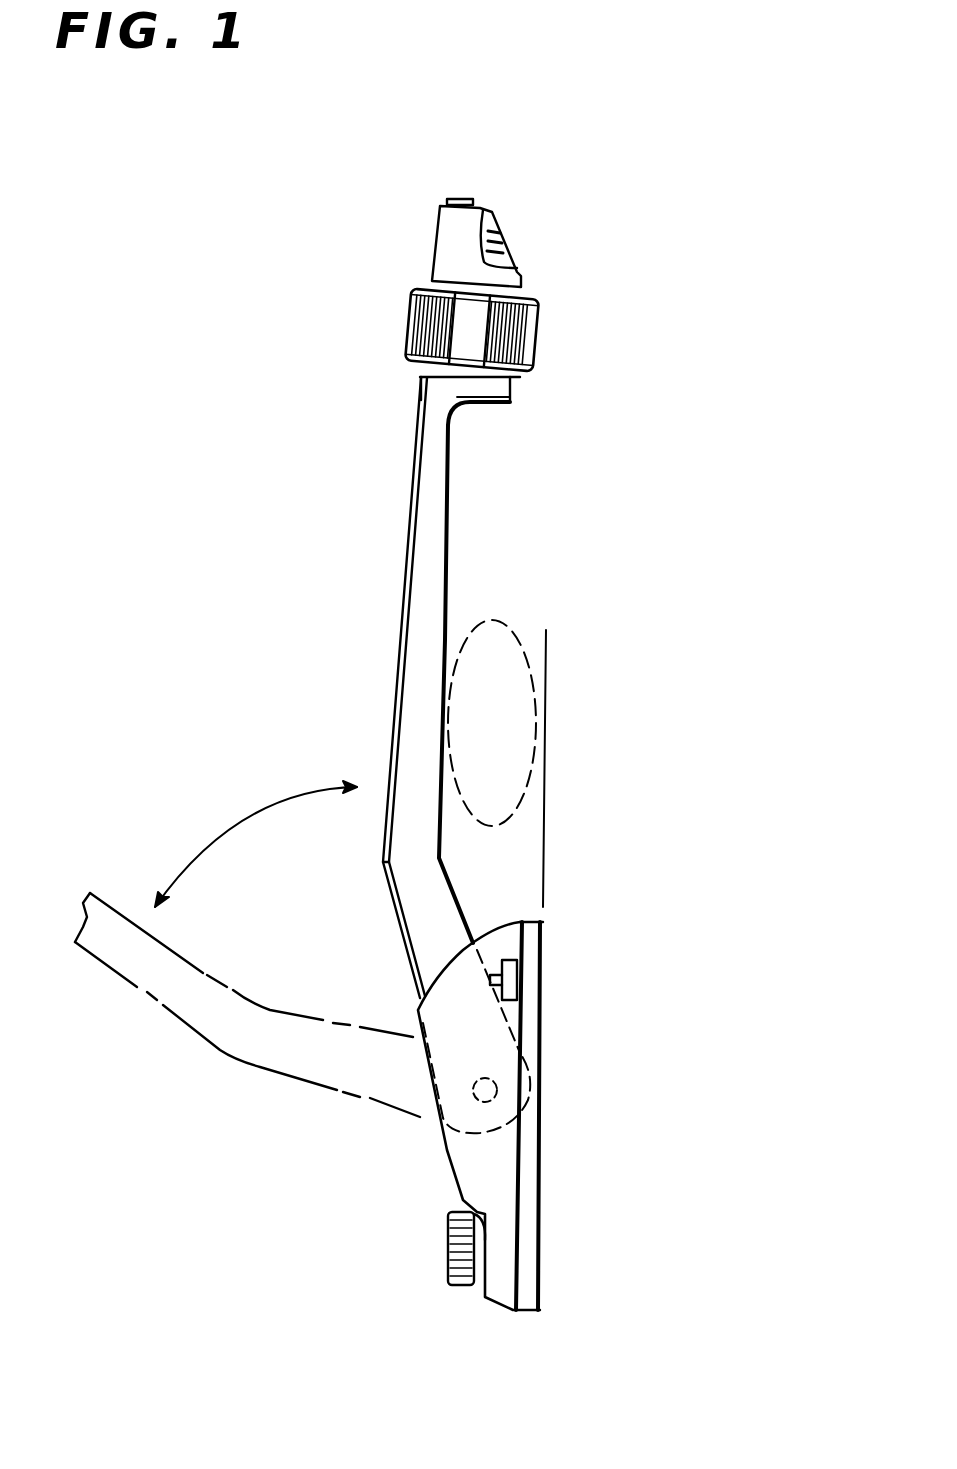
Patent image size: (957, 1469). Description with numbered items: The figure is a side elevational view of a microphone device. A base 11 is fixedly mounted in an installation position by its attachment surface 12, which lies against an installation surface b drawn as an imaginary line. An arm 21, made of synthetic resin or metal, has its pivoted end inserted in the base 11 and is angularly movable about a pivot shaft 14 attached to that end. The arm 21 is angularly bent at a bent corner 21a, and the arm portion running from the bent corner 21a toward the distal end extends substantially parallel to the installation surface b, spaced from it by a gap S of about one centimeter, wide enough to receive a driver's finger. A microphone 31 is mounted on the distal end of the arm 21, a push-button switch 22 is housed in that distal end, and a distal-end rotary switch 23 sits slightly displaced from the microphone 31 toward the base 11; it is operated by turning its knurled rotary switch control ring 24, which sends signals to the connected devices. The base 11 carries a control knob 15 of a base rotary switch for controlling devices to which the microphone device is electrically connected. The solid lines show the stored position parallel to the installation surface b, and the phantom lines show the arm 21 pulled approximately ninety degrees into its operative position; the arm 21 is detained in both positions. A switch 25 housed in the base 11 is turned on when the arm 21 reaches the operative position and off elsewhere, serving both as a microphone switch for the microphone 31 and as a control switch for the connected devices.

The base 11 is at (447, 1153).
The attachment surface 12 is at (543, 1033).
The pivot shaft 14 is at (497, 1087).
The control knob 15 is at (460, 1288).
The arm 21 is at (402, 597).
The bent corner 21a is at (388, 882).
The push-button switch 22 is at (459, 198).
The distal-end rotary switch 23 is at (460, 366).
The rotary switch control ring 24 is at (407, 320).
The switch 25 is at (517, 982).
The microphone 31 is at (512, 237).
The gap S is at (515, 625).
The installation surface b is at (548, 820).